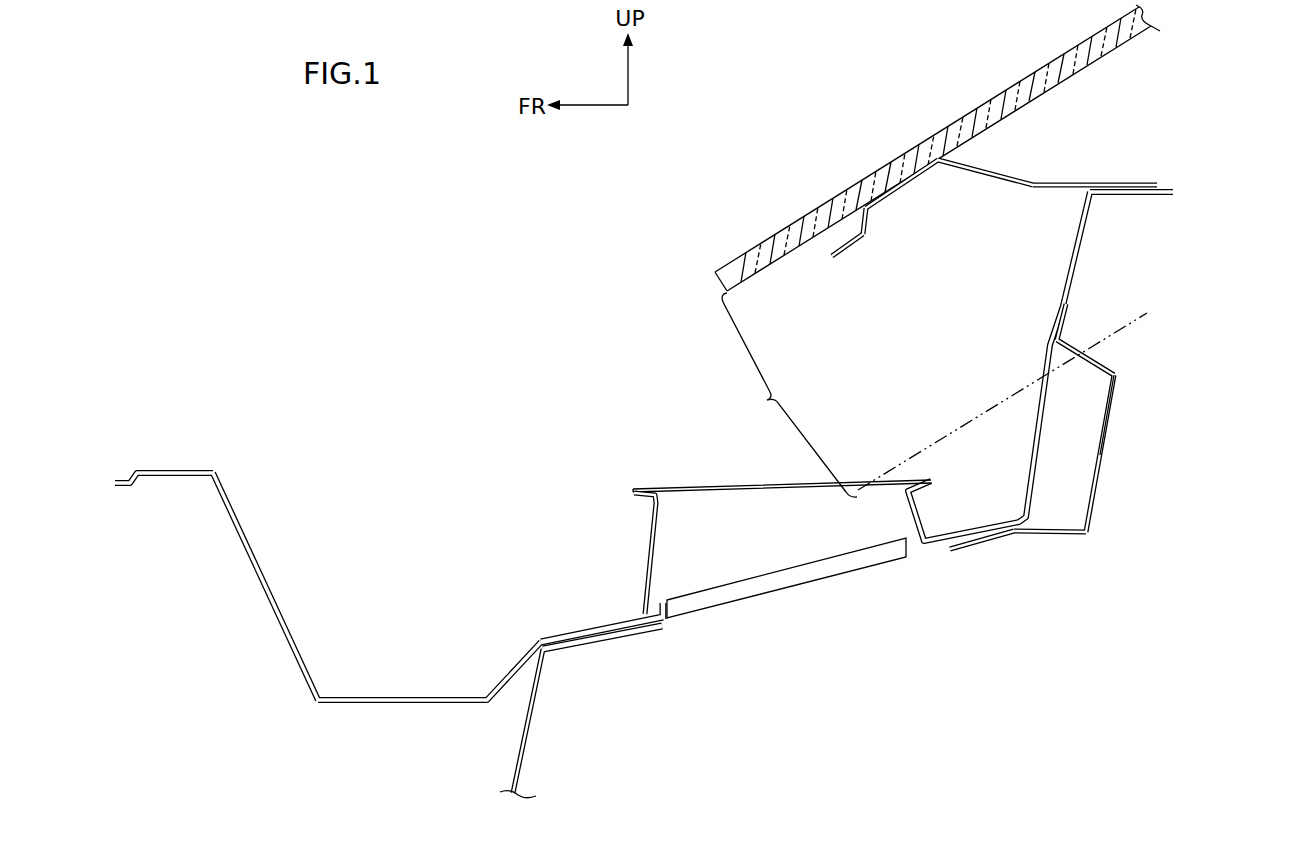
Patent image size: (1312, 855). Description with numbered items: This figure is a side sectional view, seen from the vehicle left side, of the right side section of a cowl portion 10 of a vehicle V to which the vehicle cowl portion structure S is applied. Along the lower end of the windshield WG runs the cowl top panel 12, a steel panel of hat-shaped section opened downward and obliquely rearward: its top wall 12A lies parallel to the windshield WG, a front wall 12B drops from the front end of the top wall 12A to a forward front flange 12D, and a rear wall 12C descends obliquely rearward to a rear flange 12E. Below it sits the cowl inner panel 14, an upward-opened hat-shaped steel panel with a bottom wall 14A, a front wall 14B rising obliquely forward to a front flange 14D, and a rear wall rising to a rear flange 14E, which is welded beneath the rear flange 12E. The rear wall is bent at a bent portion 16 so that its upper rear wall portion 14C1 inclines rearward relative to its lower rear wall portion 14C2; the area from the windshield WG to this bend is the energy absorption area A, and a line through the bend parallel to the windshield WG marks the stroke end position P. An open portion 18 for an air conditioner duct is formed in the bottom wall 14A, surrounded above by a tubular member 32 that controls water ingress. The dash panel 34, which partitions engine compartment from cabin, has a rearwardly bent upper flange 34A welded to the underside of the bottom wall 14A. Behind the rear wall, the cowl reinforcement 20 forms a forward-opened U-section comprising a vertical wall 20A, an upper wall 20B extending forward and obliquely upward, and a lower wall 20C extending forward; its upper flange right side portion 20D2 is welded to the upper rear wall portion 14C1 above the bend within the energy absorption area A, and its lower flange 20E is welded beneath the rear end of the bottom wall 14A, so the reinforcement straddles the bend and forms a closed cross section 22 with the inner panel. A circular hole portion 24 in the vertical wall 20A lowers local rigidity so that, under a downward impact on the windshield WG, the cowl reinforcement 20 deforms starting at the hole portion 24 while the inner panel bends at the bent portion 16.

The cowl portion 10 is at (578, 406).
The cowl top panel 12 is at (985, 213).
The top wall 12A is at (910, 182).
The front wall 12B is at (872, 226).
The rear wall 12C is at (996, 166).
The front flange 12D is at (846, 254).
The rear flange 12E is at (1115, 182).
The cowl inner panel 14 is at (696, 423).
The bottom wall 14A is at (547, 637).
The front wall 14B is at (263, 569).
The upper rear wall portion 14C1 is at (1085, 241).
The lower rear wall portion 14C2 is at (1027, 467).
The front flange 14D is at (175, 470).
The rear flange 14E is at (1150, 198).
The bent portion 16 is at (1037, 381).
The open portion 18 is at (900, 558).
The cowl reinforcement 20 is at (1105, 451).
The vertical wall 20A is at (1091, 515).
The upper wall 20B is at (1076, 338).
The lower wall 20C is at (1055, 537).
The upper flange right side portion 20D2 is at (1067, 306).
The lower flange 20E is at (985, 560).
The closed cross section 22 is at (1082, 448).
The hole portion 24 is at (1108, 415).
The tubular member 32 is at (648, 517).
The dash panel 34 is at (588, 712).
The upper flange 34A is at (628, 641).
The energy absorption area A is at (789, 395).
The stroke end position P is at (1135, 322).
The vehicle cowl portion structure S is at (608, 350).
The vehicle V is at (797, 108).
The windshield WG is at (985, 103).